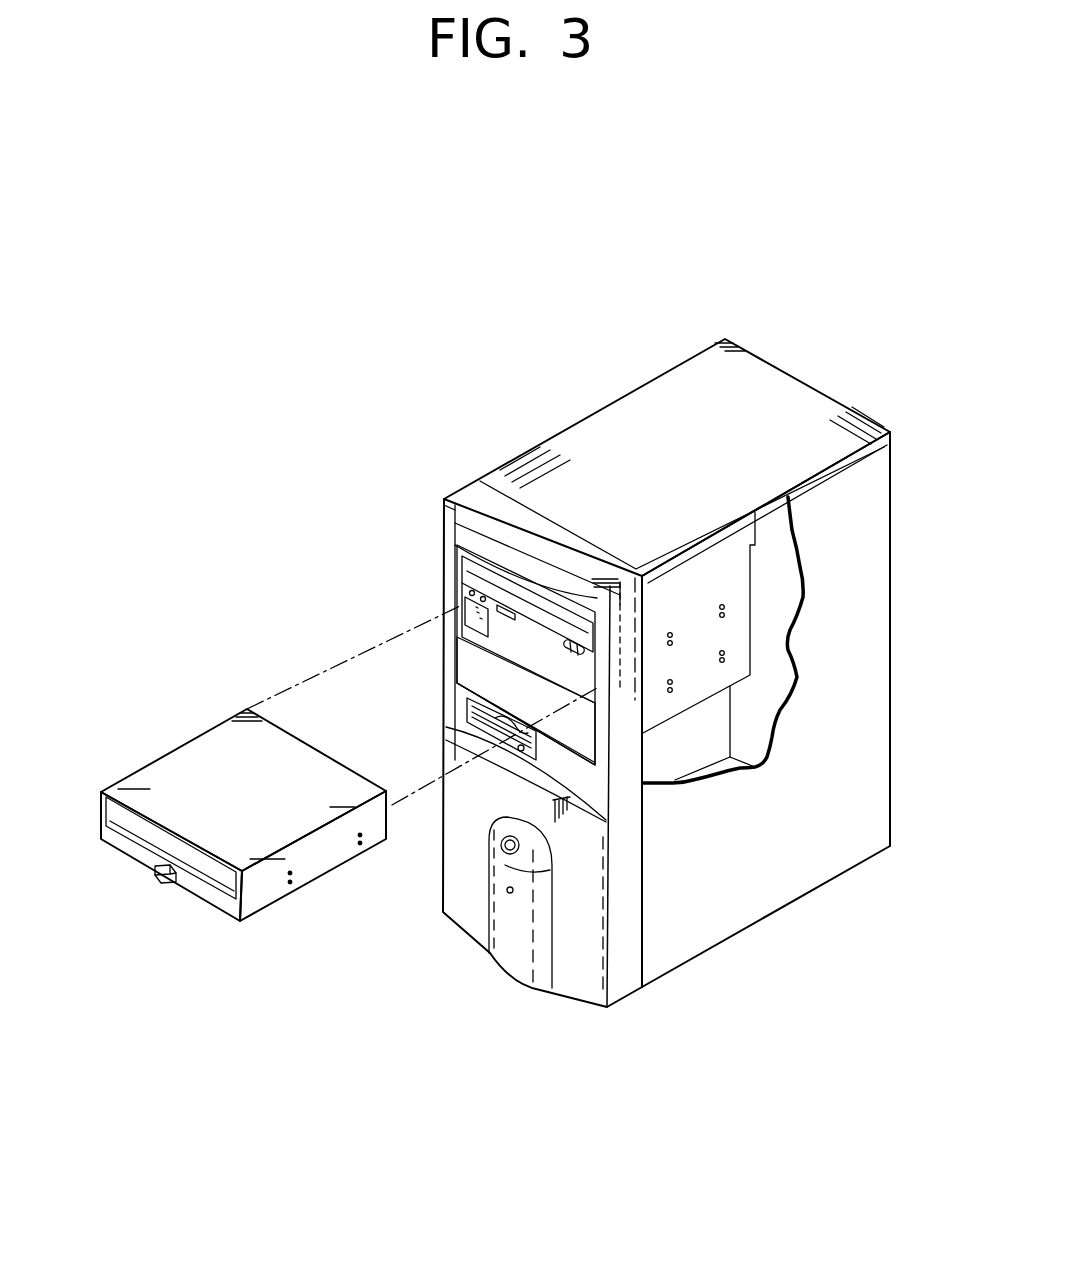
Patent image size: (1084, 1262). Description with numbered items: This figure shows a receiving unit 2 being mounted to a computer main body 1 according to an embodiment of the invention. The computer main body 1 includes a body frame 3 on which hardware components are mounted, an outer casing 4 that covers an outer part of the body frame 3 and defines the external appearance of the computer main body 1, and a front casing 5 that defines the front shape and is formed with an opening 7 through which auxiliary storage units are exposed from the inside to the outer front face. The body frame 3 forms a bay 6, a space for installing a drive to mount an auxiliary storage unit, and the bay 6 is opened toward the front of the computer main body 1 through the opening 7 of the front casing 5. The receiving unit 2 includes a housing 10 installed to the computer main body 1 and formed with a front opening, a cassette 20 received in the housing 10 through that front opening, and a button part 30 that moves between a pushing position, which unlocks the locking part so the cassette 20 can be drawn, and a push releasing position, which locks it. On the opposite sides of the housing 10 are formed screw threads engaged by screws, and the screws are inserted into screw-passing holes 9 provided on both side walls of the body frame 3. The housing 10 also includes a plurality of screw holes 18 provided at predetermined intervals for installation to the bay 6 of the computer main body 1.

The computer main body 1 is at (849, 326).
The receiving unit 2 is at (104, 779).
The body frame 3 is at (733, 623).
The outer casing 4 is at (631, 418).
The front casing 5 is at (619, 973).
The bay 6 is at (499, 631).
The opening 7 is at (503, 660).
The screw-passing holes 9 is at (723, 660).
The housing 10 is at (173, 770).
The screw holes 18 is at (292, 877).
The cassette 20 is at (136, 832).
The button part 30 is at (152, 877).